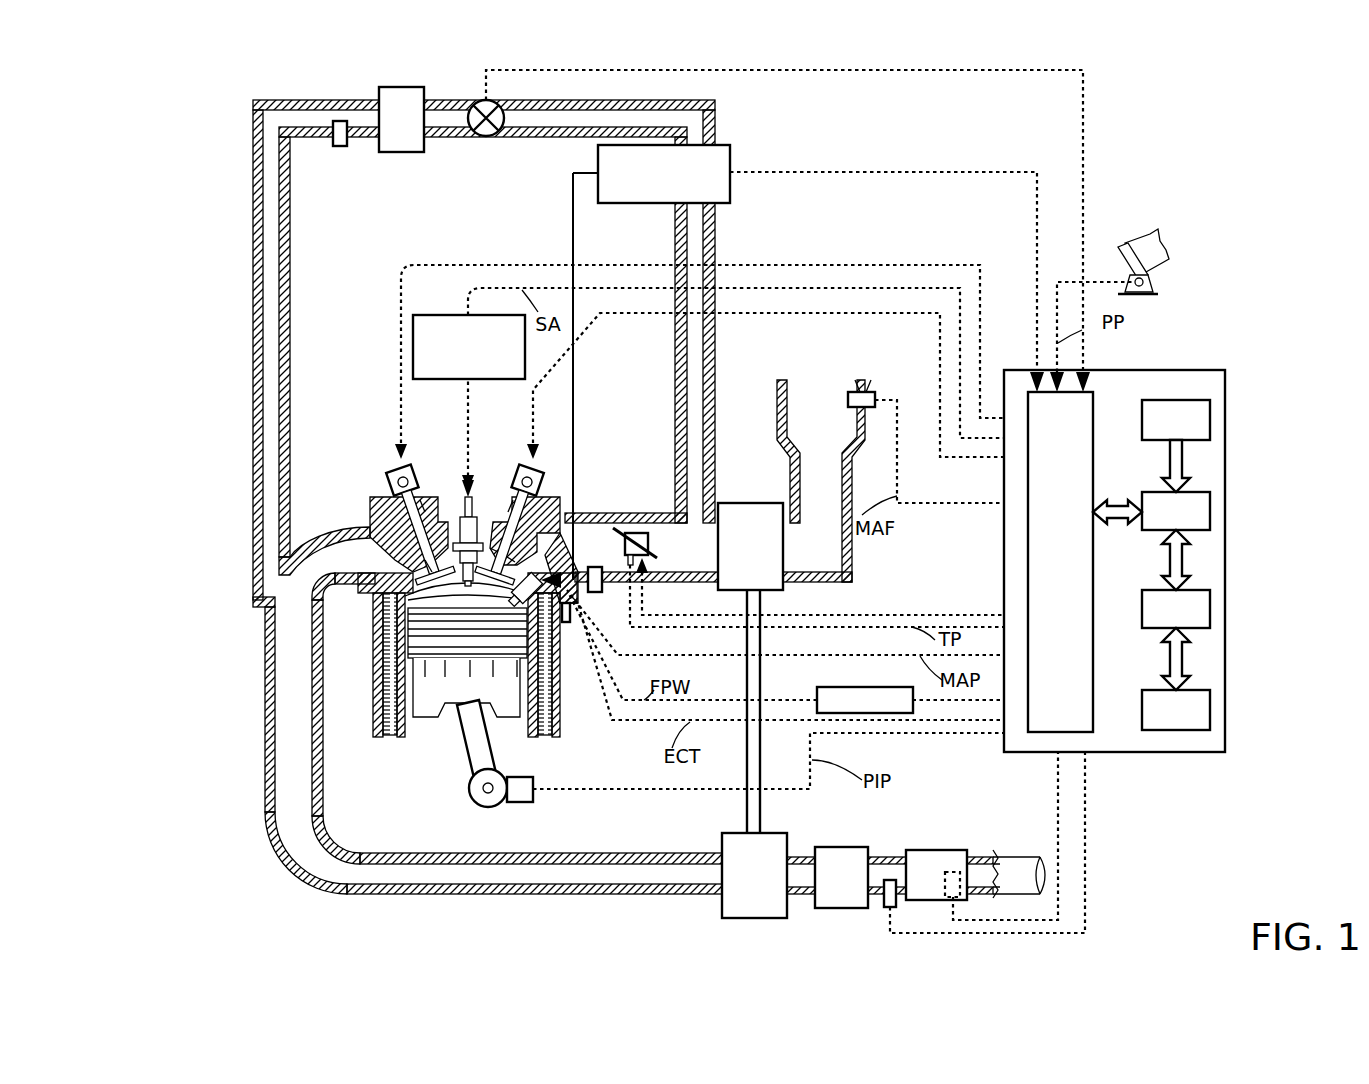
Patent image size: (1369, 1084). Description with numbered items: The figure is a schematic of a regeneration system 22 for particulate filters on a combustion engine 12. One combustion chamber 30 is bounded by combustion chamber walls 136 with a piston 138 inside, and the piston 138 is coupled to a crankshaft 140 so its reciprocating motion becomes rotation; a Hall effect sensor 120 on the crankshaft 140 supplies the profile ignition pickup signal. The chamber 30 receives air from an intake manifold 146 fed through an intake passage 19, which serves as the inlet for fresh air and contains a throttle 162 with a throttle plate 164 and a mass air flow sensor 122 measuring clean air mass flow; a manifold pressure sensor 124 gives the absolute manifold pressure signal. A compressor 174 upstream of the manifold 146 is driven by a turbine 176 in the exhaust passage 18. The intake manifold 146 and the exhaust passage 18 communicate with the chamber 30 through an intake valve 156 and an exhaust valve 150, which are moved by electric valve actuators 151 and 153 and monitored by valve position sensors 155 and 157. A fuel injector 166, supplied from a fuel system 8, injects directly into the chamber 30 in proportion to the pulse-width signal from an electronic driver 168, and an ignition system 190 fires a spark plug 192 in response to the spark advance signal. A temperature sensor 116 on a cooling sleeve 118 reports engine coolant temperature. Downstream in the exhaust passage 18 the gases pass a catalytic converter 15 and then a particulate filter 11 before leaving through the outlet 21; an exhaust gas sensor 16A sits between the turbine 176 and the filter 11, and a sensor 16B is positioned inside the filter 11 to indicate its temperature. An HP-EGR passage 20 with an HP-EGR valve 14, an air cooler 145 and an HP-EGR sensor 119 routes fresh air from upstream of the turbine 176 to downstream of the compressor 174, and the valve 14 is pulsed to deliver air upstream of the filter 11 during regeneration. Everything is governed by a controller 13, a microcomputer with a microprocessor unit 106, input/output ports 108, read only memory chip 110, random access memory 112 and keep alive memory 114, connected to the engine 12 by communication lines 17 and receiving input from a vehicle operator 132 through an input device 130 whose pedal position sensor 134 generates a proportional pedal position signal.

The regeneration system 22 is at (115, 118).
The combustion engine 12 is at (195, 252).
The HP-EGR passage 20 is at (716, 238).
The exhaust passage 18 is at (327, 563).
The communication lines 17 is at (1062, 872).
The outlet 21 is at (1028, 855).
The air cooler 145 is at (398, 150).
The HP-EGR valve 14 is at (484, 137).
The HP-EGR sensor 119 is at (338, 147).
The fuel system 8 is at (805, 362).
The ignition system 190 is at (424, 318).
The combustion chamber walls 136 is at (403, 740).
The combustion chamber 30 is at (393, 600).
The spark plug 192 is at (462, 518).
The exhaust valve 150 is at (500, 555).
The valve position sensor 157 is at (388, 478).
The electric valve actuator 153 is at (410, 485).
The intake valve 156 is at (437, 567).
The valve position sensor 155 is at (550, 487).
The electric valve actuator 151 is at (521, 488).
The fuel injector 166 is at (538, 590).
The piston 138 is at (450, 690).
The crankshaft 140 is at (478, 805).
The Hall effect sensor 120 is at (520, 805).
The intake manifold 146 is at (708, 547).
The throttle 162 is at (645, 532).
The throttle plate 164 is at (612, 528).
The manifold pressure sensor 124 is at (597, 594).
The cooling sleeve 118 is at (565, 700).
The temperature sensor 116 is at (584, 610).
The electronic driver 168 is at (818, 690).
The intake passage 19 is at (821, 481).
The mass air flow sensor 122 is at (870, 392).
The compressor 174 is at (750, 668).
The turbine 176 is at (754, 875).
The catalytic converter 15 is at (841, 877).
The particulate filter 11 is at (936, 875).
The exhaust gas sensor 16A is at (884, 905).
The sensor 16B is at (945, 897).
The controller 13 is at (1226, 370).
The input/output ports 108 is at (1095, 395).
The read only memory chip 110 is at (1211, 418).
The microprocessor unit 106 is at (1211, 508).
The random access memory 112 is at (1211, 607).
The keep alive memory 114 is at (1211, 707).
The input device 130 is at (1178, 245).
The pedal position sensor 134 is at (1160, 286).
The vehicle operator 132 is at (1128, 262).